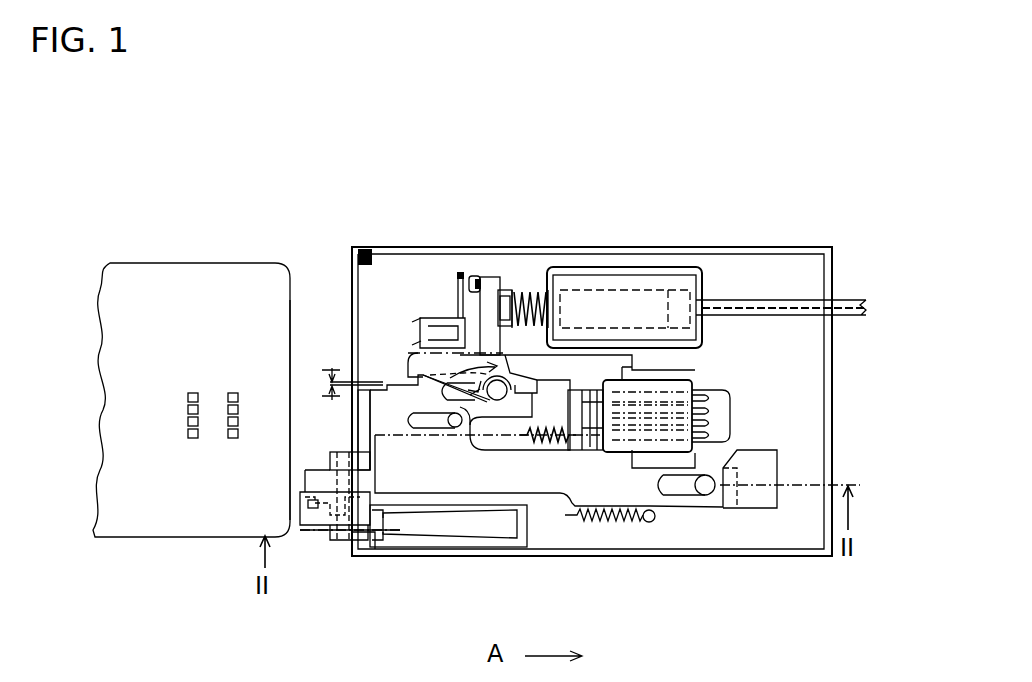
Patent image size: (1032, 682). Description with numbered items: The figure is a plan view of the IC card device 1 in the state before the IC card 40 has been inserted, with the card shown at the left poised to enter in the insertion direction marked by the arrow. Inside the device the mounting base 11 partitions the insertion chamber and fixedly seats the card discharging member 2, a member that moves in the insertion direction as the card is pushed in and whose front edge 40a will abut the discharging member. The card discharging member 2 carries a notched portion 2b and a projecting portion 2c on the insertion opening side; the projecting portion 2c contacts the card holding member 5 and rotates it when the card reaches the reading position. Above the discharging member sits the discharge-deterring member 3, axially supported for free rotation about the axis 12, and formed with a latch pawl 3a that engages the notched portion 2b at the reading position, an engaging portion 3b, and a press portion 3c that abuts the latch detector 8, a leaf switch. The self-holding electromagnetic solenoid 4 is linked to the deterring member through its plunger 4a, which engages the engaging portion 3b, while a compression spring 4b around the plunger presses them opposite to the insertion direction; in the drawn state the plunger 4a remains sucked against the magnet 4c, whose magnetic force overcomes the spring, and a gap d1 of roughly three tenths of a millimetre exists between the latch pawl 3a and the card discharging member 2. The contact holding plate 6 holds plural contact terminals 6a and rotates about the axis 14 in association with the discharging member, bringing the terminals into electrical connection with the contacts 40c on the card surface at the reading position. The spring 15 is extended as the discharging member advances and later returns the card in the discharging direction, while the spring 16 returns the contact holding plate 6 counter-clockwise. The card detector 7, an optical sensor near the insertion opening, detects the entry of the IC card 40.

The IC card device 1 is at (640, 226).
The card discharging member 2 is at (692, 508).
The notched portion 2b is at (360, 405).
The projecting portion 2c is at (304, 540).
The discharge-deterring member 3 is at (489, 277).
The latch pawl 3a is at (410, 376).
The engaging portion 3b is at (498, 280).
The press portion 3c is at (477, 280).
The self-holding electromagnetic solenoid 4 is at (610, 270).
The plunger 4a is at (521, 290).
The compression spring 4b is at (508, 295).
The magnet 4c is at (683, 300).
The card holding member 5 is at (318, 520).
The contact holding plate 6 is at (684, 387).
The contact terminals 6a is at (703, 392).
The card detector 7 is at (440, 522).
The latch detector 8 is at (455, 275).
The mounting base 11 is at (812, 520).
The axis 12 is at (495, 400).
The axis 14 is at (592, 450).
The spring 15 is at (616, 520).
The spring 16 is at (546, 440).
The IC card 40 is at (231, 284).
The front edge 40a is at (293, 385).
The contacts 40c is at (232, 440).
The gap d1 is at (340, 378).